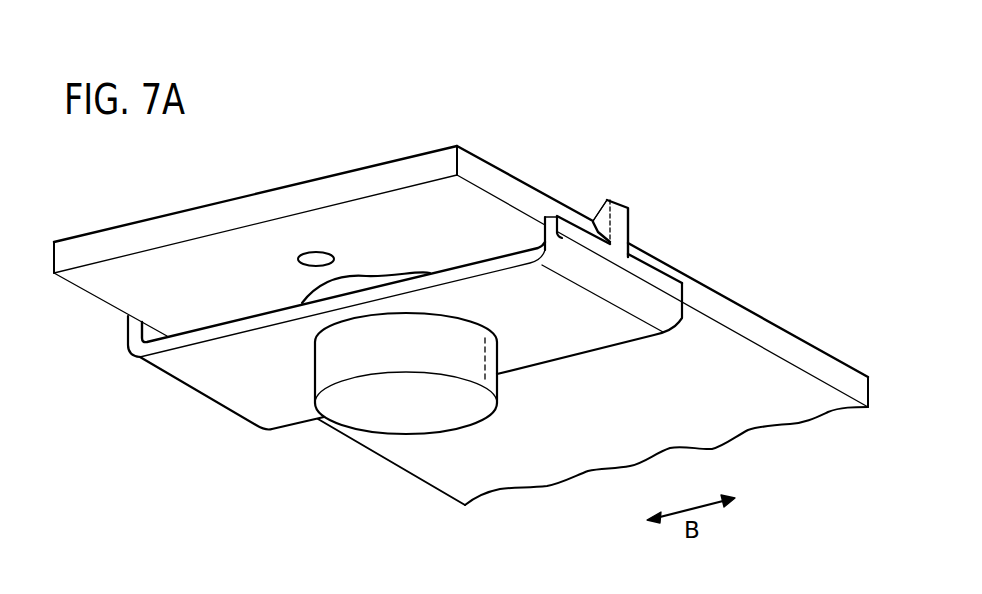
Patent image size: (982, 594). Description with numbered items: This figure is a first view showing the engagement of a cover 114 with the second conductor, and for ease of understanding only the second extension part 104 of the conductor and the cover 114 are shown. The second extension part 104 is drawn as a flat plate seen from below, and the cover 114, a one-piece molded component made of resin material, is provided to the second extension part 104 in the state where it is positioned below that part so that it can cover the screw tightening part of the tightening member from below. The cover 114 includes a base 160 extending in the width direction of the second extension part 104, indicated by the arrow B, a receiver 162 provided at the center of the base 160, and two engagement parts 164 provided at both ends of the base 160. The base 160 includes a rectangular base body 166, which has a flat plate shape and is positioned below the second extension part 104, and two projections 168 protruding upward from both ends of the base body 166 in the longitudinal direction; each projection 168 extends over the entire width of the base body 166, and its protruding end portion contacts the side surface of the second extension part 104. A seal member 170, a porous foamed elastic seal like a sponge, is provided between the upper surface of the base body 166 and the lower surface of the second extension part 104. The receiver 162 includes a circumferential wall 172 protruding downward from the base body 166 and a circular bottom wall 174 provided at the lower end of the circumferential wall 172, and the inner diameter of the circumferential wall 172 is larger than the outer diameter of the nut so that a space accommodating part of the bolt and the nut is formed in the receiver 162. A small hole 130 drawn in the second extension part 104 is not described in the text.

The second extension part 104 is at (760, 326).
The cover 114 is at (598, 180).
The hole 130 is at (317, 253).
The base 160 is at (409, 301).
The receiver 162 is at (406, 434).
The engagement part 164 is at (618, 201).
The base body 166 is at (260, 397).
The projection 168 is at (662, 282).
The seal member 170 is at (373, 283).
The circumferential wall 172 is at (353, 358).
The bottom wall 174 is at (407, 418).